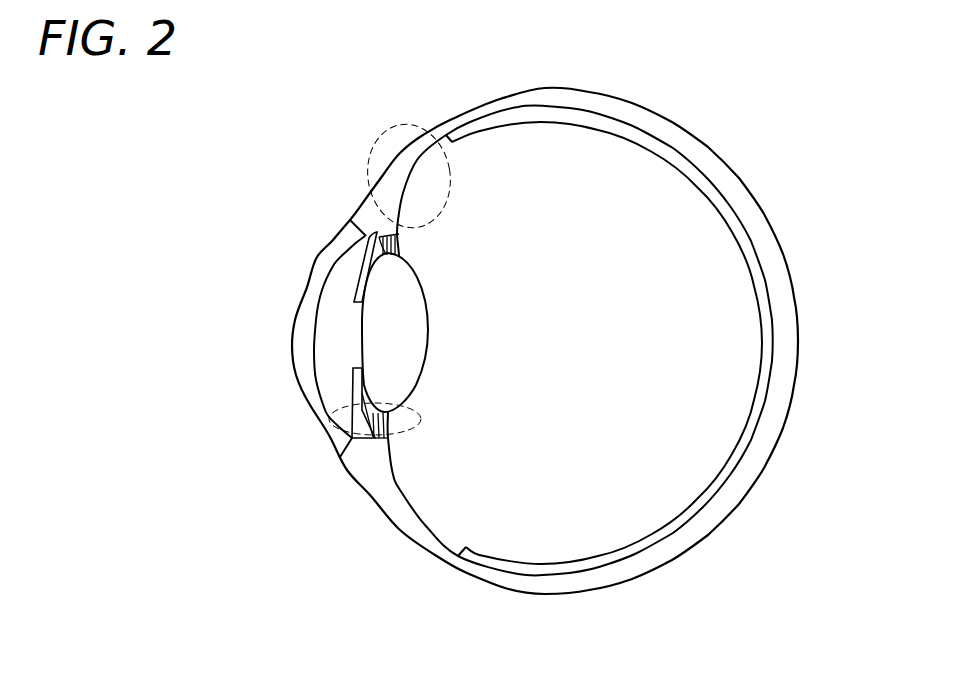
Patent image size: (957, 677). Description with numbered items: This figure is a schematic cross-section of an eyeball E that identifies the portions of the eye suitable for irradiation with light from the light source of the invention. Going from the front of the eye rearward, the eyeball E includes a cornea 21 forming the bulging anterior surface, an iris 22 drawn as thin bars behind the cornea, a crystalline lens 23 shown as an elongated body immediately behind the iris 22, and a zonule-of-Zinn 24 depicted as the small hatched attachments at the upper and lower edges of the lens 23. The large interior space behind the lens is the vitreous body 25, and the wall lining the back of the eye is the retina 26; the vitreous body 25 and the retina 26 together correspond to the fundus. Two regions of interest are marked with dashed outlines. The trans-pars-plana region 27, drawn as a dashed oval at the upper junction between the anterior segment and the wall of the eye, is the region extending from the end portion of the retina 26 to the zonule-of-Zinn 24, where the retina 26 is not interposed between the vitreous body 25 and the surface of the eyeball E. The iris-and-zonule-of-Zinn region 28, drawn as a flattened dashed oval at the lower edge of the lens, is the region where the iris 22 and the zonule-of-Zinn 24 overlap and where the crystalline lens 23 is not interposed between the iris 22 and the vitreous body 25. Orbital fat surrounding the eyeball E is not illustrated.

The cornea 21 is at (292, 346).
The iris 22 is at (354, 281).
The crystalline lens 23 is at (358, 346).
The zonule-of-Zinn 24 is at (372, 234).
The vitreous body 25 is at (580, 177).
The retina 26 is at (767, 273).
The trans-pars-plana region 27 is at (411, 122).
The iris-and-zonule-of-Zinn region 28 is at (365, 437).
The eyeball E is at (750, 107).